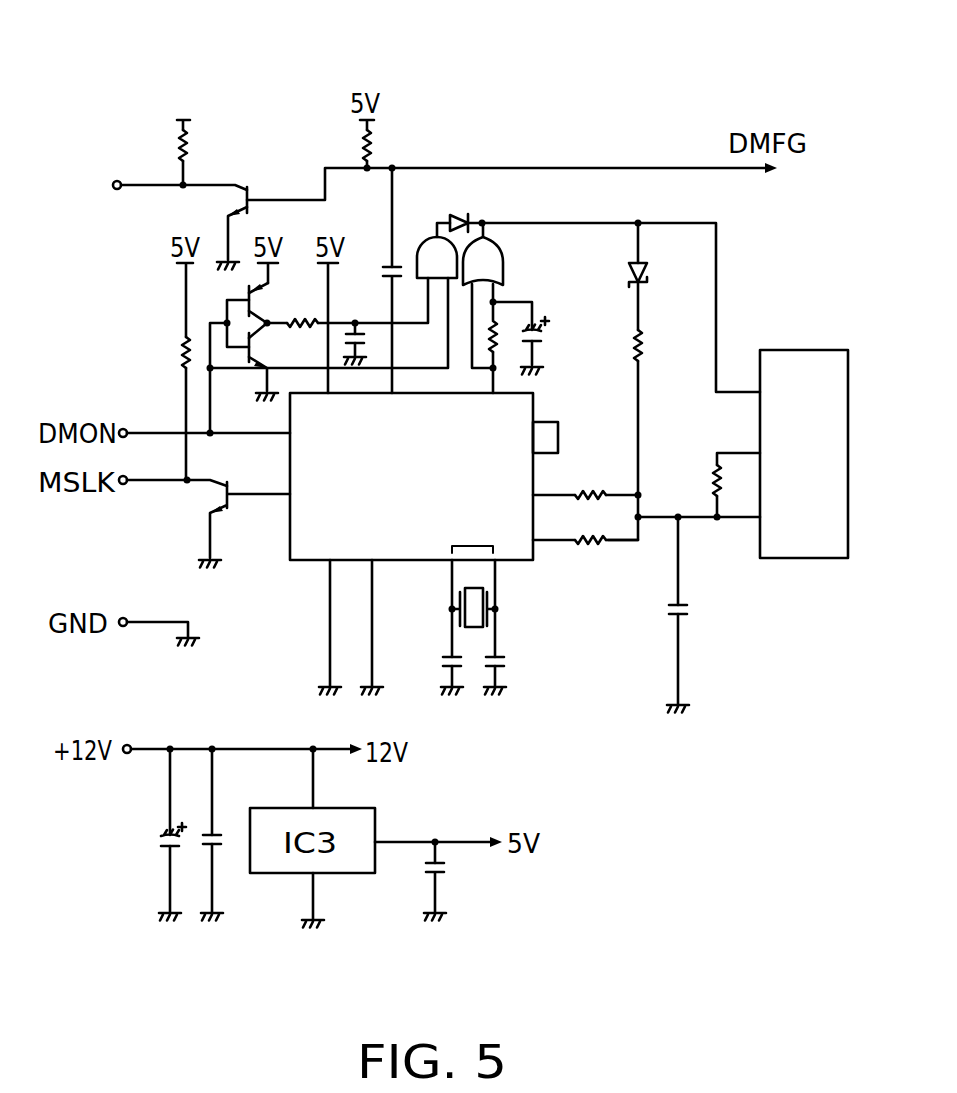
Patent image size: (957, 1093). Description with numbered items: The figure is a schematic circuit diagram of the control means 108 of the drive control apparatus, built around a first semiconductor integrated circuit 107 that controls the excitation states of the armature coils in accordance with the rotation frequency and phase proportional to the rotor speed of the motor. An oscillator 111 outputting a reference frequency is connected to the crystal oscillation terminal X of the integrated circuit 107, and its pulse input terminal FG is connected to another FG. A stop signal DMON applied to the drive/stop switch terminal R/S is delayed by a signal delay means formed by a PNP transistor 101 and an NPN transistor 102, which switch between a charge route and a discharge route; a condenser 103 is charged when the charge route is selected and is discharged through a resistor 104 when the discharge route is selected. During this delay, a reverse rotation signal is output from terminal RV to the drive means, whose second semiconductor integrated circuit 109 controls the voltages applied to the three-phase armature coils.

The control means 108 is at (178, 79).
The PNP transistor 101 is at (266, 288).
The NPN transistor 102 is at (257, 352).
The condenser 103 is at (364, 332).
The resistor 104 is at (312, 318).
The semiconductor integrated circuit (IC1) 107 is at (302, 561).
The semiconductor integrated circuit (IC2) 109 is at (782, 348).
The oscillator 111 is at (460, 616).